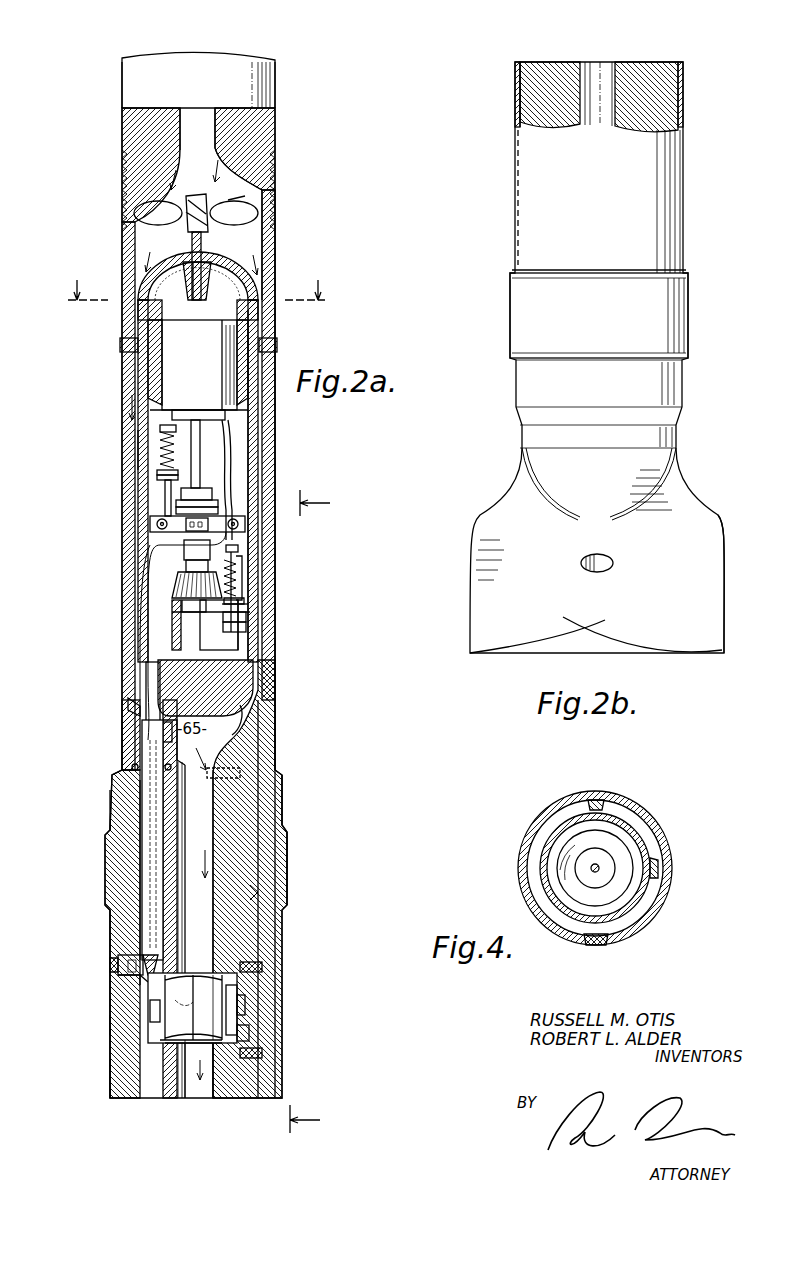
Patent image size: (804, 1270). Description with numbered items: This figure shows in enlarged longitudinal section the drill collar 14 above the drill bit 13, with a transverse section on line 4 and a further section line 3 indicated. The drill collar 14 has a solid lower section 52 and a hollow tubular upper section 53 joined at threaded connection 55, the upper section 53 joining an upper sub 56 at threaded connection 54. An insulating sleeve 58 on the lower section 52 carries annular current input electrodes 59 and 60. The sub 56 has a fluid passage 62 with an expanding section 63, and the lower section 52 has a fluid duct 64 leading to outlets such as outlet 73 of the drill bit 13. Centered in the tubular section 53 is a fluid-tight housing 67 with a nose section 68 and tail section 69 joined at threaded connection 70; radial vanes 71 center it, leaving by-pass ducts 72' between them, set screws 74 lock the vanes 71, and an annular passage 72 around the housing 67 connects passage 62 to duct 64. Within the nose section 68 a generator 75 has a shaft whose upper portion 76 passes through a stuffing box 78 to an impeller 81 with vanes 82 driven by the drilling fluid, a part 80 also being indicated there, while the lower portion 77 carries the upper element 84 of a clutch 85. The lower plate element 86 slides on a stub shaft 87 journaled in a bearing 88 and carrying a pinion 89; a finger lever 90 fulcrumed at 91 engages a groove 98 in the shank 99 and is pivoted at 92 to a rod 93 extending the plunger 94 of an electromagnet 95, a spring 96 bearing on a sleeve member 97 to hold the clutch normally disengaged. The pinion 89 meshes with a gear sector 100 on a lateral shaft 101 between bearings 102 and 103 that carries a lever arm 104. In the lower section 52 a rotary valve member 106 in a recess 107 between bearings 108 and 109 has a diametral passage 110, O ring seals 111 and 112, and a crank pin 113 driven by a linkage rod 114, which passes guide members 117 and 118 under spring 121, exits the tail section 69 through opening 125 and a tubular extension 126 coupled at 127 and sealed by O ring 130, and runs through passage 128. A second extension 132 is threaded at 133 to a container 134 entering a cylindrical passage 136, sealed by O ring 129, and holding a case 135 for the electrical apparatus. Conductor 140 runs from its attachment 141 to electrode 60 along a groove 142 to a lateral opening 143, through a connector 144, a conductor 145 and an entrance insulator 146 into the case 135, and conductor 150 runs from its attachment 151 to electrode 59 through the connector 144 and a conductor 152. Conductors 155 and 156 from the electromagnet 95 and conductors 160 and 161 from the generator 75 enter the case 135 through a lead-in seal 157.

In FIG. 2B, the drill bit 13 is at (700, 510).
In FIG. 2A, the drill collar 14 is at (308, 817).
In FIG. 2A, the section line 3 is at (315, 811).
In FIG. 2A, the section line 4— 4 is at (196, 309).
In FIG. 2A, the lower section 52 is at (258, 801).
In FIG. 2B, the lower section 52 is at (662, 110).
In FIG. 2A, the upper section 53 is at (268, 252).
In FIG. 4, the upper section 53 is at (542, 814).
In FIG. 2A, the threaded connection 54 is at (268, 176).
In FIG. 2A, the threaded connection 55 is at (260, 726).
In FIG. 2A, the upper sub 56 is at (268, 84).
In FIG. 2A, the insulating sleeve 58 is at (284, 781).
In FIG. 2B, the insulating sleeve 58 is at (682, 84).
In FIG. 2A, the annular current input electrode 59 is at (288, 856).
In FIG. 2B, the annular current input electrode 60 is at (658, 327).
In FIG. 2A, the central fluid passage 62 is at (214, 126).
In FIG. 2A, the expanding section 63 is at (233, 177).
In FIG. 2A, the fluid duct 64 is at (208, 924).
In FIG. 2B, the fluid duct 64 is at (608, 70).
In FIG. 2A, the housing 67 is at (266, 466).
In FIG. 2A, the nose section 68 is at (245, 292).
In FIG. 4, the nose section 68 is at (648, 846).
In FIG. 2A, the tail section 69 is at (244, 591).
In FIG. 2A, the threaded connection 70 is at (227, 390).
In FIG. 2A, the supporting vanes 71 is at (129, 343).
In FIG. 4, the supporting vanes 71 is at (600, 798).
In FIG. 2A, the annular passage 72 is at (122, 450).
In FIG. 4, the by-pass fluid ducts 72' is at (617, 860).
In FIG. 2B, the fluid outlet 73 is at (614, 563).
In FIG. 2A, the set screws 74 is at (276, 345).
In FIG. 2A, the generator 75 is at (199, 365).
In FIG. 4, the generator 75 is at (565, 868).
In FIG. 2A, the upper shaft portion 76 is at (200, 300).
In FIG. 4, the upper shaft portion 76 is at (592, 870).
In FIG. 2A, the lower shaft portion 77 is at (200, 450).
In FIG. 2A, the stuffing box 78 is at (206, 262).
In FIG. 2A, the shaft 80 is at (185, 236).
In FIG. 2A, the impeller 81 is at (236, 203).
In FIG. 2A, the impeller vanes 82 is at (246, 213).
In FIG. 2A, the upper clutch element 84 is at (212, 492).
In FIG. 2A, the clutch device 85 is at (225, 505).
In FIG. 2A, the lower plate element 86 is at (170, 520).
In FIG. 2A, the stub shaft 87 is at (226, 543).
In FIG. 2A, the bearing 88 is at (232, 560).
In FIG. 2A, the pinion 89 is at (185, 580).
In FIG. 2A, the finger lever 90 is at (192, 530).
In FIG. 2A, the fulcrum 91 is at (240, 530).
In FIG. 2A, the pivot 92 is at (181, 525).
In FIG. 2A, the rod 93 is at (165, 500).
In FIG. 2A, the plunger 94 is at (165, 445).
In FIG. 2A, the electromagnet 95 is at (163, 430).
In FIG. 2A, the helical spring 96 is at (168, 470).
In FIG. 2A, the annular sleeve member 97 is at (170, 482).
In FIG. 2A, the circumferential groove 98 is at (182, 534).
In FIG. 2A, the shank 99 is at (196, 553).
In FIG. 2A, the gear sector 100 is at (184, 605).
In FIG. 2A, the lateral shaft 101 is at (246, 627).
In FIG. 2A, the bearing 102 is at (238, 548).
In FIG. 2A, the bearing 103 is at (246, 615).
In FIG. 2A, the lever arm 104 is at (226, 632).
In FIG. 2A, the rotary valve member 106 is at (160, 1036).
In FIG. 2A, the cylindrical recess 107 is at (250, 1030).
In FIG. 2A, the bearing 108 is at (150, 1000).
In FIG. 2A, the bearing 109 is at (252, 988).
In FIG. 2A, the diametral passage 110 is at (192, 1035).
In FIG. 2A, the O ring 111 is at (170, 1050).
In FIG. 2A, the O ring 112 is at (232, 1080).
In FIG. 2A, the crank pin 113 is at (248, 1004).
In FIG. 2A, the linkage rod 114 is at (238, 641).
In FIG. 2A, the guide member 117 is at (248, 603).
In FIG. 2A, the guide member 118 is at (237, 570).
In FIG. 2A, the helical spring 121 is at (242, 580).
In FIG. 2A, the longitudinal opening 125 is at (253, 668).
In FIG. 2A, the tubular extension 126 is at (250, 700).
In FIG. 2A, the coupling connection 127 is at (272, 740).
In FIG. 2A, the longitudinal passage 128 is at (258, 892).
In FIG. 2A, the O ring seal 129 is at (132, 767).
In FIG. 2A, the O ring 130 is at (255, 775).
In FIG. 2A, the tubular extension 132 is at (128, 700).
In FIG. 2A, the threaded connection 133 is at (148, 722).
In FIG. 2A, the cylindrical container 134 is at (128, 798).
In FIG. 2A, the case 135 is at (150, 873).
In FIG. 2A, the cylindrical passage 136 is at (130, 817).
In FIG. 2A, the insulated electrical conductor 140 is at (120, 1024).
In FIG. 2B, the insulated electrical conductor 140 is at (520, 120).
In FIG. 2B, the attachment point 141 is at (512, 272).
In FIG. 2A, the longitudinal groove 142 is at (120, 1076).
In FIG. 2B, the longitudinal groove 142 is at (518, 98).
In FIG. 2A, the lateral opening 143 is at (98, 966).
In FIG. 2A, the connector device 144 is at (128, 976).
In FIG. 2A, the conductor 145 is at (142, 986).
In FIG. 2A, the entrance insulator 146 is at (150, 930).
In FIG. 2A, the insulated electrical conductor 150 is at (120, 919).
In FIG. 2A, the attachment point 151 is at (108, 910).
In FIG. 2A, the conductor 152 is at (136, 953).
In FIG. 2A, the insulated conductor 155 is at (152, 608).
In FIG. 2A, the insulated conductor 156 is at (152, 630).
In FIG. 2A, the lead-in seal 157 is at (152, 675).
In FIG. 2A, the insulated conductor 160 is at (232, 425).
In FIG. 2A, the insulated conductor 161 is at (233, 439).